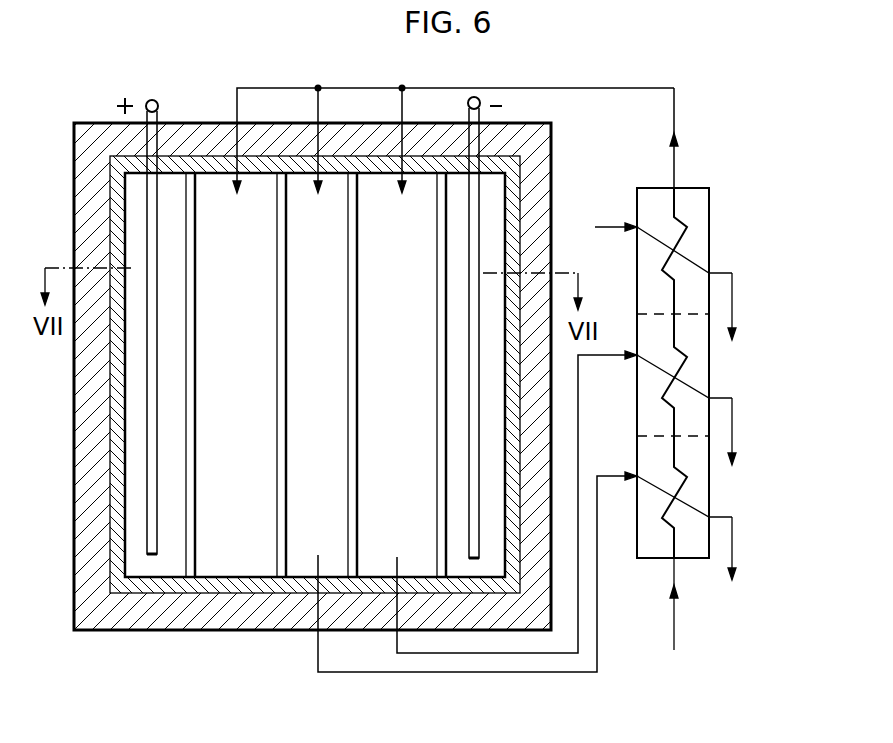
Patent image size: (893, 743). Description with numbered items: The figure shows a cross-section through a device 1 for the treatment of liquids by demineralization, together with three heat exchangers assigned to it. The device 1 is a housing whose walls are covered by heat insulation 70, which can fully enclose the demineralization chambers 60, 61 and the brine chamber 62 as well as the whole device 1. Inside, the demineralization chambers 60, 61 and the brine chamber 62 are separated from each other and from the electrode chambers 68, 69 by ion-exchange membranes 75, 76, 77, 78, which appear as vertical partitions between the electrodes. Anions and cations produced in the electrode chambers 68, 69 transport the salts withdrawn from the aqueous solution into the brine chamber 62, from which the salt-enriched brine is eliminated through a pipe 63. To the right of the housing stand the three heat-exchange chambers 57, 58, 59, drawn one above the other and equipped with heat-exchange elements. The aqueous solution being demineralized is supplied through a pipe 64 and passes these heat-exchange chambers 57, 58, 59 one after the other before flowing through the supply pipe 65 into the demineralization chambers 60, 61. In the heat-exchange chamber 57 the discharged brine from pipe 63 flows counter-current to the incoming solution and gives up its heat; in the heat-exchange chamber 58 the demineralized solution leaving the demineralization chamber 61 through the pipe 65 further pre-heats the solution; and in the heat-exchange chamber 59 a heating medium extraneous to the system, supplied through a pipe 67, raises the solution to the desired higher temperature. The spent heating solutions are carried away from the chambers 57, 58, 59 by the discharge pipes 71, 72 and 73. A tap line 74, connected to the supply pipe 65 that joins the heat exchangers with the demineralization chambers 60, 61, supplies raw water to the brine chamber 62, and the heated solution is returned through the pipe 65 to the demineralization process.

The device 1 is at (118, 642).
The heat-exchange chamber 57 is at (670, 468).
The heat-exchange chamber 58 is at (670, 347).
The heat-exchange chamber 59 is at (670, 220).
The demineralization chamber 60 is at (248, 421).
The demineralization chamber 61 is at (407, 423).
The brine chamber 62 is at (330, 423).
The pipe 63 is at (598, 577).
The pipe 64 is at (675, 635).
The pipe 65 is at (616, 90).
The pipe 67 is at (606, 224).
The electrode chamber 68 is at (165, 518).
The electrode chamber 69 is at (457, 497).
The heat insulation 70 is at (232, 624).
The discharge pipe 71 is at (738, 558).
The discharge pipe 72 is at (738, 443).
The discharge pipe 73 is at (738, 318).
The tap line 74 is at (318, 88).
The ion-exchange membrane 75 is at (192, 301).
The ion-exchange membrane 76 is at (284, 302).
The ion-exchange membrane 77 is at (354, 302).
The ion-exchange membrane 78 is at (438, 330).